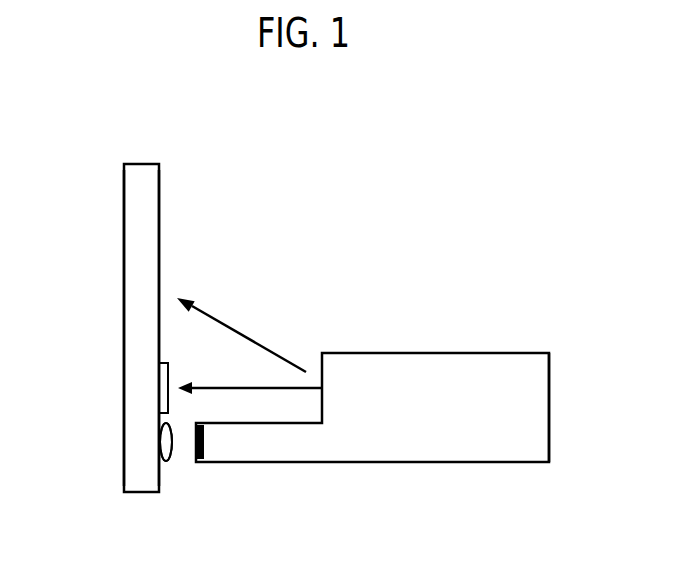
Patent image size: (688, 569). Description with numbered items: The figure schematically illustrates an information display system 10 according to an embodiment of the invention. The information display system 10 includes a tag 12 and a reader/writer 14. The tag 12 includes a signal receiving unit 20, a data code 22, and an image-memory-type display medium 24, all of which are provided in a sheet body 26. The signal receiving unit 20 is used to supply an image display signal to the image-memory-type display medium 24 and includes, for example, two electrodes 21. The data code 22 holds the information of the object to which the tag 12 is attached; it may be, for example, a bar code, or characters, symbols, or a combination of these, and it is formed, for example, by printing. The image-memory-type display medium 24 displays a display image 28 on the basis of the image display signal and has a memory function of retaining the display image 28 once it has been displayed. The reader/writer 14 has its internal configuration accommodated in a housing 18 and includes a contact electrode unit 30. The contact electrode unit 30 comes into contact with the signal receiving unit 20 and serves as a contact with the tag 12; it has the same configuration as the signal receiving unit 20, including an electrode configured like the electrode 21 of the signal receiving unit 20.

The information display system 10 is at (486, 157).
The tag 12 is at (141, 162).
The reader/writer 14 is at (538, 320).
The housing 18 is at (549, 390).
The signal receiving unit 20 is at (174, 472).
The electrode 21 is at (164, 443).
The data code 22 is at (162, 386).
The image-memory-type display medium 24 is at (159, 200).
The sheet body 26 is at (124, 282).
The display image 28 is at (176, 261).
The contact electrode unit 30 is at (203, 442).